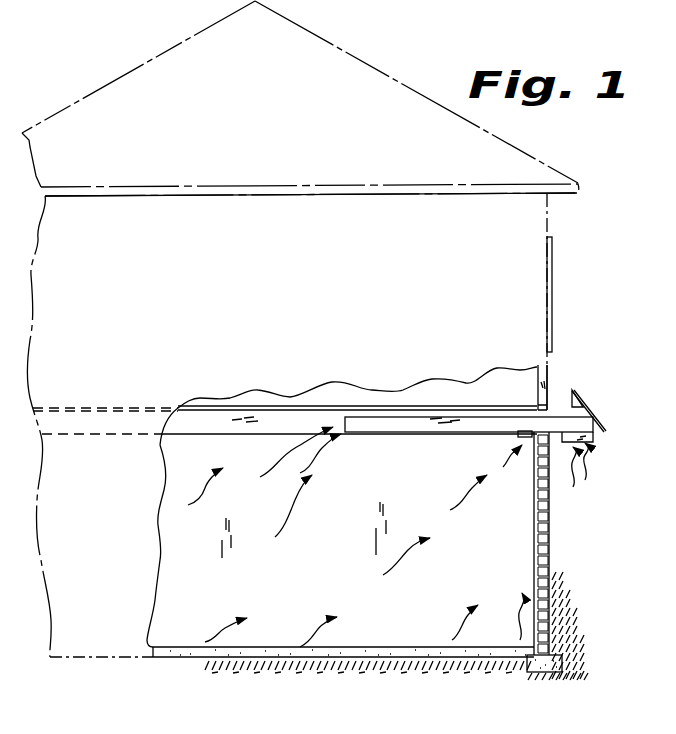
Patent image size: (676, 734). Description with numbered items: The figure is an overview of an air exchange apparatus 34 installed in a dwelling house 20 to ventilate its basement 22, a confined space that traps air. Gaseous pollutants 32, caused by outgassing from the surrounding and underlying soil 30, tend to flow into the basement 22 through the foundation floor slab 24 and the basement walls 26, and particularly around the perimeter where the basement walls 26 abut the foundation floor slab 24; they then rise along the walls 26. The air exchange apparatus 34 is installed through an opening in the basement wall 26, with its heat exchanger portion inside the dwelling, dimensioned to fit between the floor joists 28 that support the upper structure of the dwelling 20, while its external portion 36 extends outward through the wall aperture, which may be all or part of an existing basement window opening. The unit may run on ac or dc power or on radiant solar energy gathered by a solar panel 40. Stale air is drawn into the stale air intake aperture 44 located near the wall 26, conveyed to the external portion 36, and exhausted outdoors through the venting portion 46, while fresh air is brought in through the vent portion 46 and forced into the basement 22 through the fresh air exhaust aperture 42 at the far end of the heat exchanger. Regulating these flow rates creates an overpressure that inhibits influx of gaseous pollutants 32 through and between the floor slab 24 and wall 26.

The dwelling house 20 is at (556, 256).
The basement 22 is at (202, 603).
The foundation floor slab 24 is at (263, 647).
The basement wall 26 is at (533, 548).
The floor joists 28 is at (213, 430).
The soil 30 is at (456, 701).
The gaseous pollutants 32 is at (356, 537).
The air exchange apparatus 34 is at (629, 416).
The external portion 36 is at (571, 422).
The solar panel 40 is at (580, 393).
The fresh air exhaust aperture 42 is at (340, 437).
The stale air intake aperture 44 is at (516, 441).
The venting portion 46 is at (598, 437).